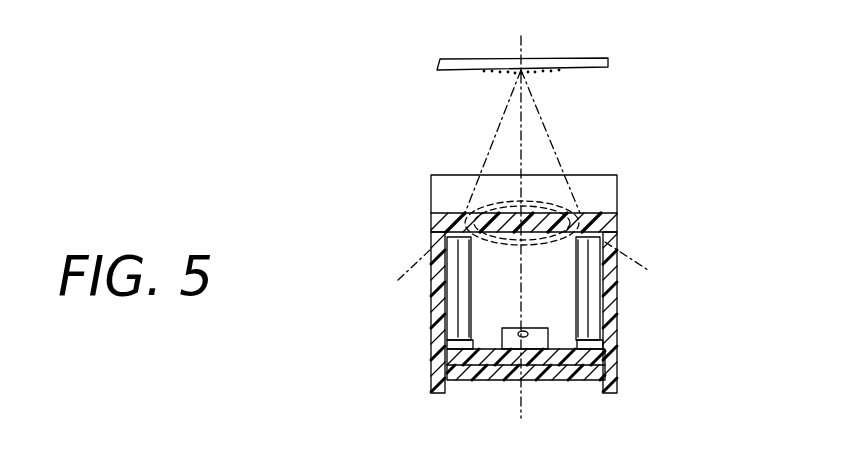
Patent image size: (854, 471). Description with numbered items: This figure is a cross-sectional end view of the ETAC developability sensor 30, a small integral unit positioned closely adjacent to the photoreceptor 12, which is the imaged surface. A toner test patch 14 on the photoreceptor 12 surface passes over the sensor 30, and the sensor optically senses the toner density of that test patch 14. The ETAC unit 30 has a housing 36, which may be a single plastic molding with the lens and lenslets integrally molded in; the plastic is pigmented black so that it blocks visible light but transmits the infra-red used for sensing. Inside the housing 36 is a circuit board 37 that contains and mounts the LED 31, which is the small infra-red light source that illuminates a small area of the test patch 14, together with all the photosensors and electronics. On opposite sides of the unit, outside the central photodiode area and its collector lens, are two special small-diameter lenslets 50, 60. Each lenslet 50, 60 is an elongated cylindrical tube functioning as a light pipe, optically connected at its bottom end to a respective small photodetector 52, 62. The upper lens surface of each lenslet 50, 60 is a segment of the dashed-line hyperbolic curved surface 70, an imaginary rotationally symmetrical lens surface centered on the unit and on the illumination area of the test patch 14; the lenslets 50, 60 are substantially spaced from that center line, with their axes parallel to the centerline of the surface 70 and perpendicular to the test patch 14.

The photoreceptor 12 is at (594, 64).
The test patch 14 is at (548, 71).
The ETAC developability sensor 30 is at (696, 158).
The LED 31 is at (521, 340).
The housing 36 is at (439, 232).
The circuit board 37 is at (540, 362).
The lenslet 50 is at (453, 305).
The photodetector 52 is at (460, 350).
The lenslet 60 is at (588, 284).
The photodetector 62 is at (585, 349).
The hyperbolic curved surface 70 is at (647, 265).